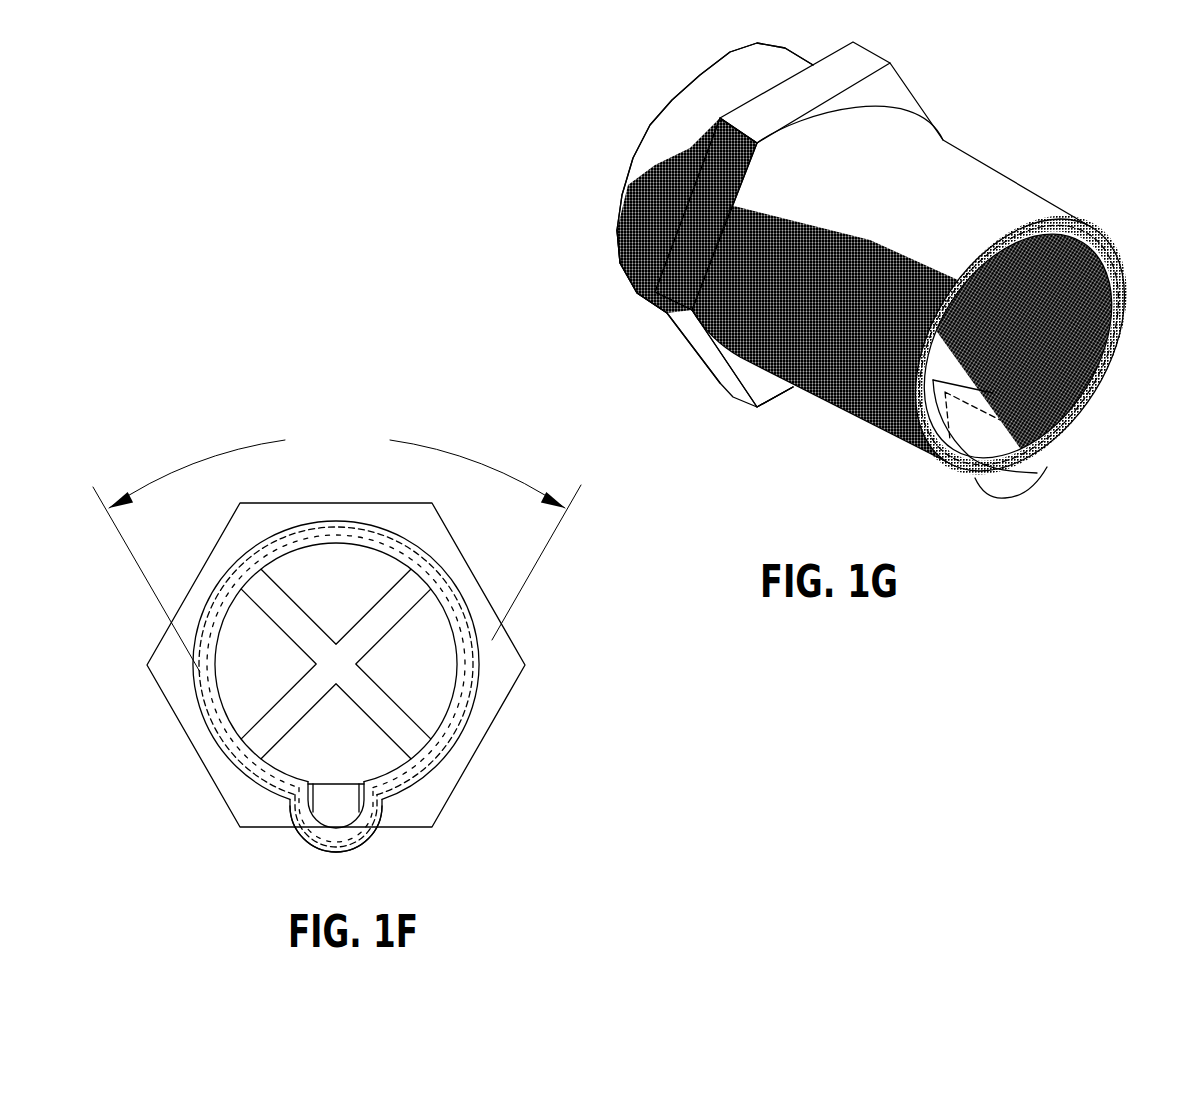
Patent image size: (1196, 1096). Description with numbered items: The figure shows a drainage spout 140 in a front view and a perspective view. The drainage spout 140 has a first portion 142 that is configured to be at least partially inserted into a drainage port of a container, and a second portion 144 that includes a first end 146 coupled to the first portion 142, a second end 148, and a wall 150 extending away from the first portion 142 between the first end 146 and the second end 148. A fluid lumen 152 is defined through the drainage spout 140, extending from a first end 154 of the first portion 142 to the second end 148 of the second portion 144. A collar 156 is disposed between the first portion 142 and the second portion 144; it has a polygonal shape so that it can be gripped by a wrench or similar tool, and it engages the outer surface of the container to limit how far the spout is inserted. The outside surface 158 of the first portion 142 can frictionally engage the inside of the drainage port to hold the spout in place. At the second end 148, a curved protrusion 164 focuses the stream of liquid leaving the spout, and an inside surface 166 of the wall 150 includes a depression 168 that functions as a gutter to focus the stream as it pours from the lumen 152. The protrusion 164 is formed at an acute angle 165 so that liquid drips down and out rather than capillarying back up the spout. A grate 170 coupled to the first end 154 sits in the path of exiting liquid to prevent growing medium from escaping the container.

In FIG. 1G, the drainage spout 140 is at (592, 68).
In FIG. 1G, the first portion 142 is at (805, 50).
In FIG. 1G, the second portion 144 is at (810, 300).
In FIG. 1G, the first end 146 is at (735, 356).
In FIG. 1G, the second end 148 is at (1115, 352).
In FIG. 1G, the wall 150 is at (855, 393).
In FIG. 1F, the fluid lumen 152 is at (252, 690).
In FIG. 1G, the fluid lumen 152 is at (1055, 360).
In FIG. 1G, the first end 154 is at (620, 136).
In FIG. 1F, the collar 156 is at (498, 663).
In FIG. 1G, the collar 156 is at (707, 350).
In FIG. 1G, the outside surface 158 is at (633, 257).
In FIG. 1F, the protrusion 164 is at (300, 850).
In FIG. 1G, the protrusion 164 is at (994, 490).
In FIG. 1F, the angle 165 is at (337, 551).
In FIG. 1G, the inside surface 166 is at (1077, 261).
In FIG. 1F, the depression 168 is at (340, 808).
In FIG. 1G, the depression 168 is at (1003, 460).
In FIG. 1F, the grate 170 is at (400, 733).